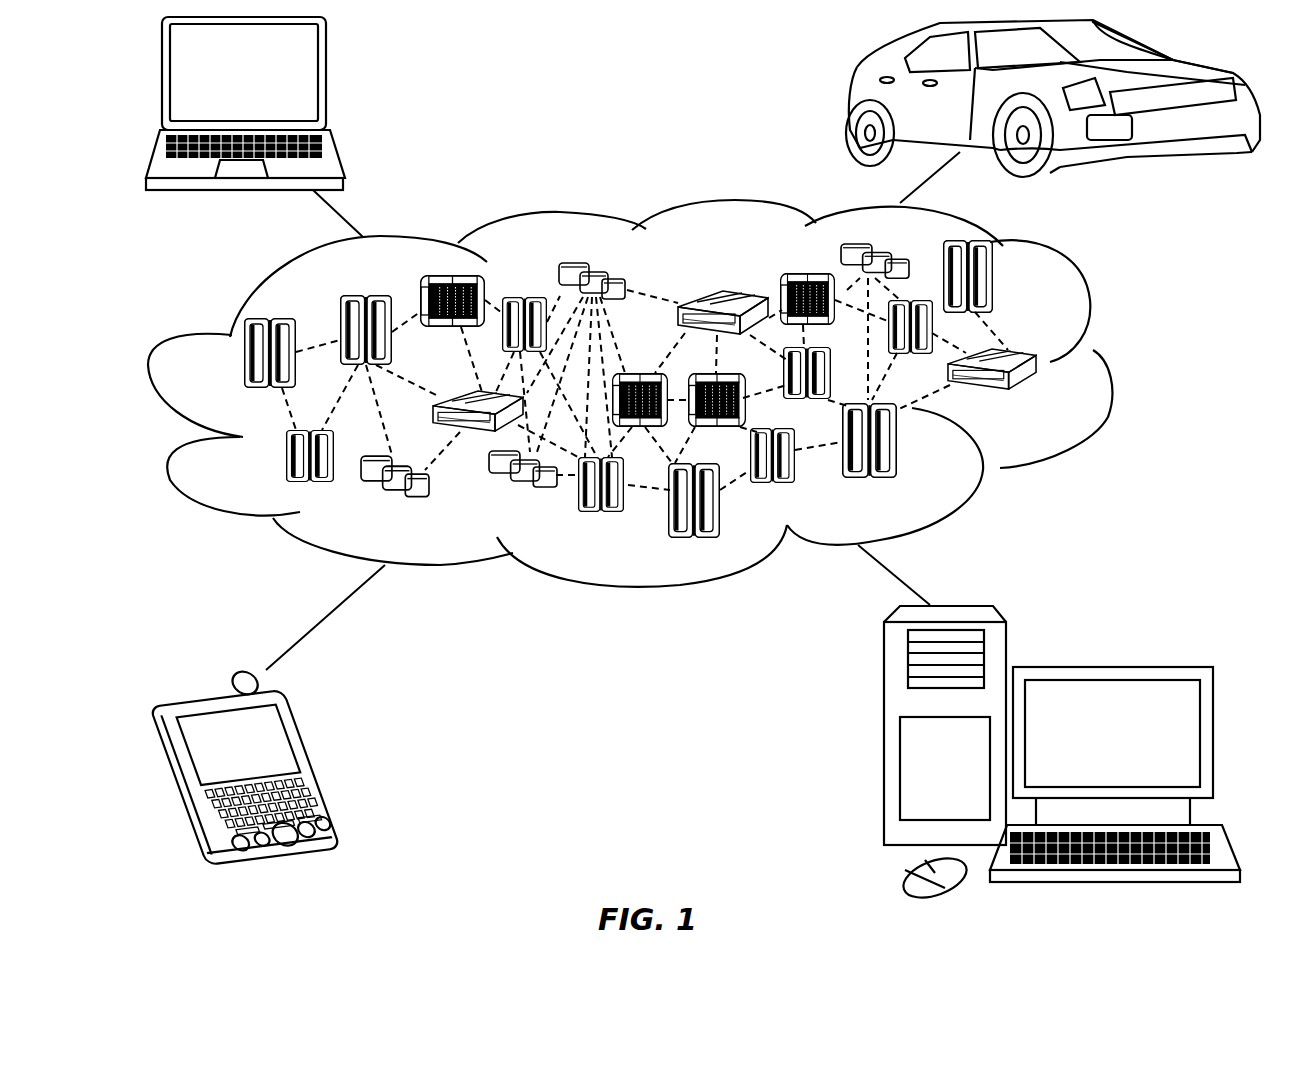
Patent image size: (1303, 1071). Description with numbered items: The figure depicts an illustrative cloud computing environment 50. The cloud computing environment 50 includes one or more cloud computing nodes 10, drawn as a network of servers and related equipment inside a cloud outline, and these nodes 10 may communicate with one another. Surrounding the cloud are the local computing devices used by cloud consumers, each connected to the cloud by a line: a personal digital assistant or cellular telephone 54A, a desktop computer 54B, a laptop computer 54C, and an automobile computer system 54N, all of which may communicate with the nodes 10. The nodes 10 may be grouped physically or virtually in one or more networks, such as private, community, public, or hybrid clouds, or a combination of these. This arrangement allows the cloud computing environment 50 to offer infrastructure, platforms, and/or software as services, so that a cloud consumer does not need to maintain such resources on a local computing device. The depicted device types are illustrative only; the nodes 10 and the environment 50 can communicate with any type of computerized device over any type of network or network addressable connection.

The cloud computing nodes 10 is at (1052, 404).
The cloud computing environment 50 is at (1112, 362).
The personal digital assistant (PDA) or cellular telephone 54A is at (312, 762).
The desktop computer 54B is at (1108, 667).
The laptop computer 54C is at (327, 81).
The automobile computer system 54N is at (848, 98).